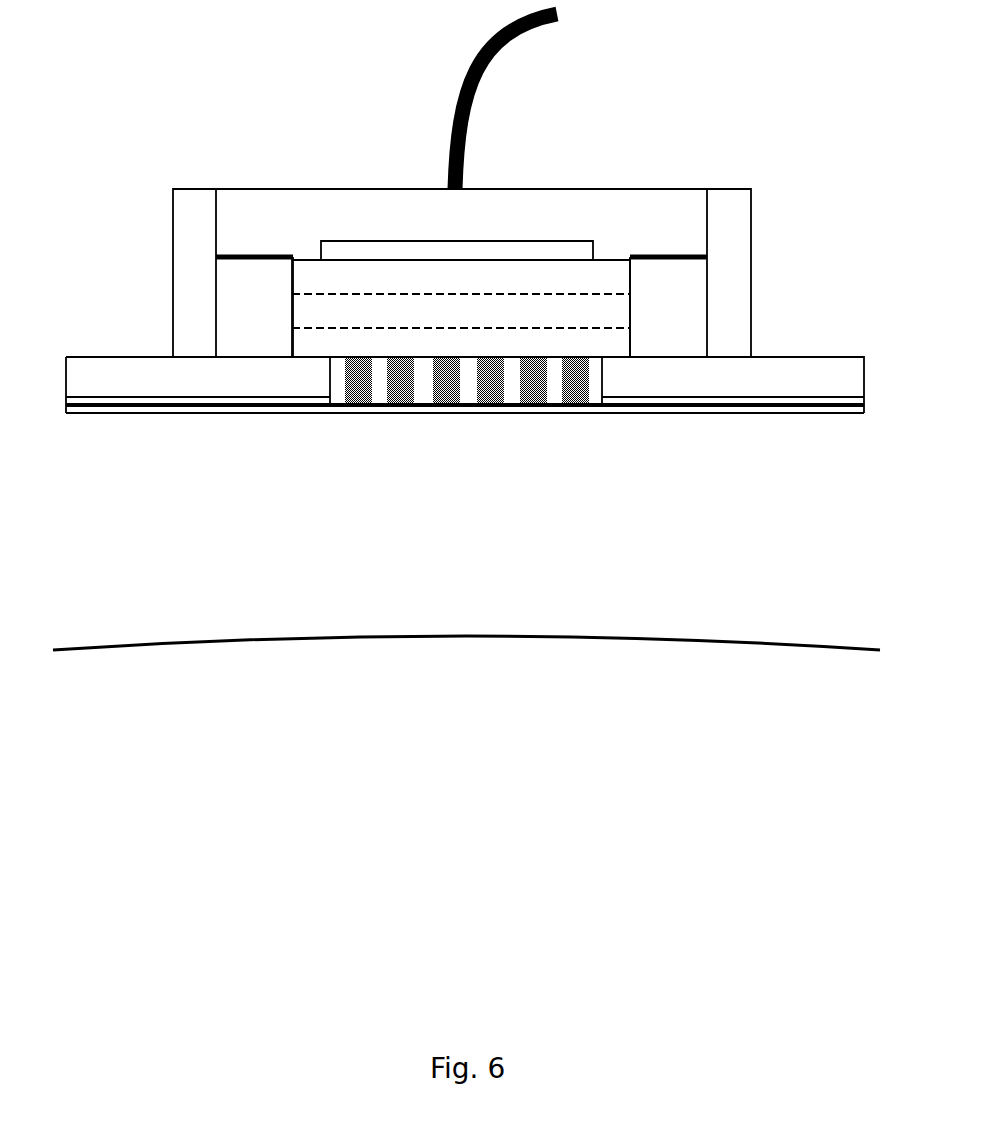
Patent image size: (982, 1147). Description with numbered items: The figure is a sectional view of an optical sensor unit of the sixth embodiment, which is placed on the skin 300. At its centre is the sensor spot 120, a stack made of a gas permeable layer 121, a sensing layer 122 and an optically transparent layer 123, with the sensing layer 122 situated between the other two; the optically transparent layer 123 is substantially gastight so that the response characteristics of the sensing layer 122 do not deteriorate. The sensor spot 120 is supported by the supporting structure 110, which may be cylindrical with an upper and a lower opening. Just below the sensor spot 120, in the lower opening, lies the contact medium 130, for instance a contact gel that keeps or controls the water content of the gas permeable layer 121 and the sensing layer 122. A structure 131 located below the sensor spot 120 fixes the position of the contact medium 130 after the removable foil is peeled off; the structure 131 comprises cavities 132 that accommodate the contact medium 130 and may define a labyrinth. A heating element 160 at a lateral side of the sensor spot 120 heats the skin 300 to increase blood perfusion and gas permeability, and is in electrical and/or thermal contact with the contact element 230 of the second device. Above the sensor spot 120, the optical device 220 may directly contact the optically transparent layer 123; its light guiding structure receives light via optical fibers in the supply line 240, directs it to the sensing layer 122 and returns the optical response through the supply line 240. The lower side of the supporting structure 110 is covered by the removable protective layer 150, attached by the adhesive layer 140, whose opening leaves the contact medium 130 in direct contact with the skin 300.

The supporting structure 110 is at (732, 215).
The sensor spot 120 is at (461, 402).
The gas permeable layer 121 is at (380, 347).
The sensing layer 122 is at (430, 312).
The optically transparent layer 123 is at (490, 278).
The contact medium 130 is at (519, 436).
The structure 131 is at (533, 387).
The cavity 132 is at (593, 392).
The adhesive layer 140 is at (87, 402).
The removable protective layer 150 is at (133, 412).
The heating element 160 is at (235, 302).
The optical device 220 is at (513, 250).
The contact element 230 is at (217, 257).
The supply line 240 is at (478, 58).
The skin 300 is at (155, 643).